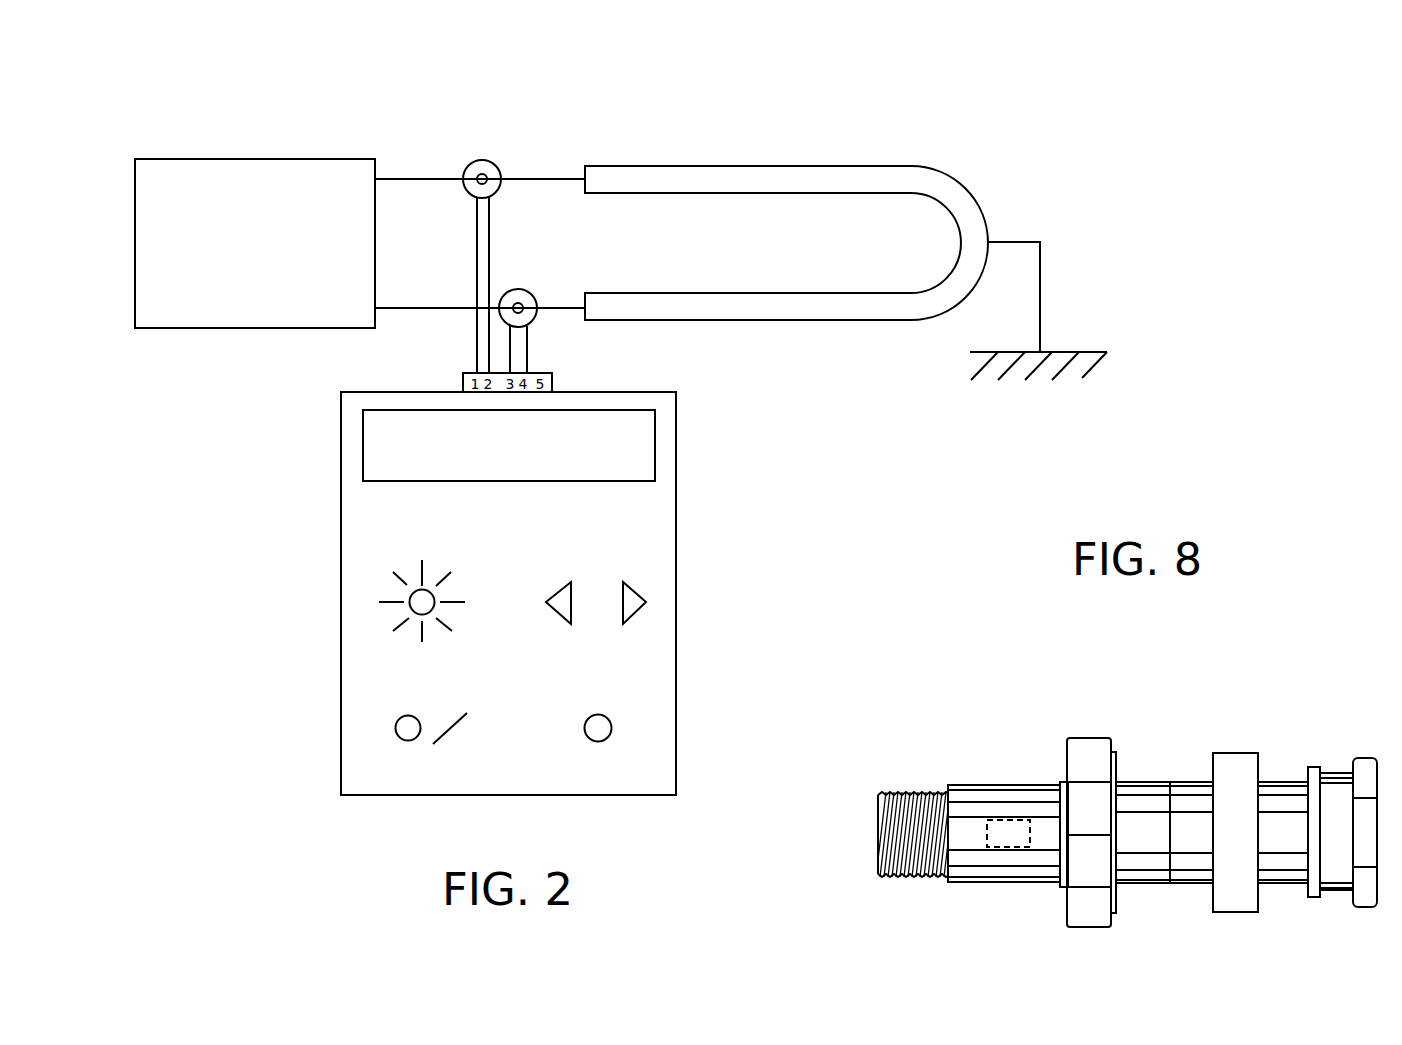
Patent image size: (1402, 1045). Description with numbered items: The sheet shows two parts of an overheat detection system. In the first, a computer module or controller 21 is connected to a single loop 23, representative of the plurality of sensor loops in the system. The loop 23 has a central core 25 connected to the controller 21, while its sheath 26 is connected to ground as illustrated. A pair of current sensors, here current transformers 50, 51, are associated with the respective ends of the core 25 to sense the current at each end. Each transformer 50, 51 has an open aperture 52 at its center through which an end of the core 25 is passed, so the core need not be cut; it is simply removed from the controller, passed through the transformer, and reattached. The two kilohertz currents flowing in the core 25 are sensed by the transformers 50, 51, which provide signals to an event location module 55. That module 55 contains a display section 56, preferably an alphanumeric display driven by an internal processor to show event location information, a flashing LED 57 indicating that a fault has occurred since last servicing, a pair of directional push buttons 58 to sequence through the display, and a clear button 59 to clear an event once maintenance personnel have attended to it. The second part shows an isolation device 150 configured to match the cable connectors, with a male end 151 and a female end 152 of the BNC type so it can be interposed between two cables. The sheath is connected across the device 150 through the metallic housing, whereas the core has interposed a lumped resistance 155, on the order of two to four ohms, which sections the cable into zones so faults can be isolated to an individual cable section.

In FIG. 2, the controller 21 is at (240, 328).
In FIG. 2, the loop 23 is at (962, 180).
In FIG. 2, the central core 25 is at (393, 182).
In FIG. 2, the sheath 26 is at (782, 166).
In FIG. 2, the current transformer 50 is at (497, 162).
In FIG. 2, the current transformer 51 is at (533, 317).
In FIG. 2, the open aperture 52 is at (481, 176).
In FIG. 2, the event location module 55 is at (341, 639).
In FIG. 2, the display section 56 is at (370, 449).
In FIG. 2, the flashing LED 57 is at (414, 586).
In FIG. 2, the directional push buttons 58 is at (569, 586).
In FIG. 2, the clear button 59 is at (611, 718).
In FIG. 8, the isolation device 150 is at (1126, 765).
In FIG. 8, the male BNC-type end 151 is at (895, 790).
In FIG. 8, the female BNC-type end 152 is at (1277, 692).
In FIG. 8, the lumped resistance 155 is at (1005, 820).